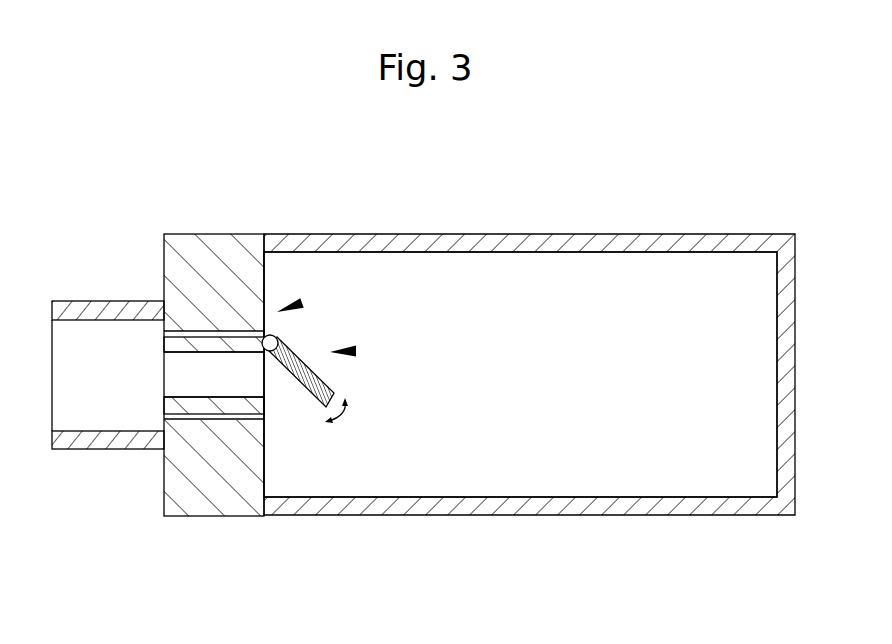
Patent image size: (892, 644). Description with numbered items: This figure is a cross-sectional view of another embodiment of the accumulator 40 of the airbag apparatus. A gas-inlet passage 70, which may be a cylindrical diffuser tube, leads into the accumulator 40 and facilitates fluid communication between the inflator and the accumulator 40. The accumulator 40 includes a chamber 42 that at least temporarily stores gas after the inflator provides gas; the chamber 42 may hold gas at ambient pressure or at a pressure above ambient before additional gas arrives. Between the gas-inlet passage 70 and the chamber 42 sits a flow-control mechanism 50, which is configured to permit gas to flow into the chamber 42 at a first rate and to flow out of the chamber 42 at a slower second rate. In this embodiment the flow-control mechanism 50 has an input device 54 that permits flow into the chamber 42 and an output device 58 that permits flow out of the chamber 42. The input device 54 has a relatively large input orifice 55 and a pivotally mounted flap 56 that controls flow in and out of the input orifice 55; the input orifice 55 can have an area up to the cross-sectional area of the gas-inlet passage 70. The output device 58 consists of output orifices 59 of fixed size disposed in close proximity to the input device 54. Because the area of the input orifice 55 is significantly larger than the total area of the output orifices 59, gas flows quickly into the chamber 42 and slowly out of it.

The accumulator 40 is at (370, 184).
The chamber 42 is at (483, 262).
The flow-control mechanism 50 is at (206, 234).
The input device 54 is at (356, 351).
The input orifice 55 is at (238, 398).
The pivotally mounted flap 56 is at (320, 380).
The output device 58 is at (302, 303).
The output orifice 59 is at (264, 335).
The gas-inlet passage 70 is at (98, 308).